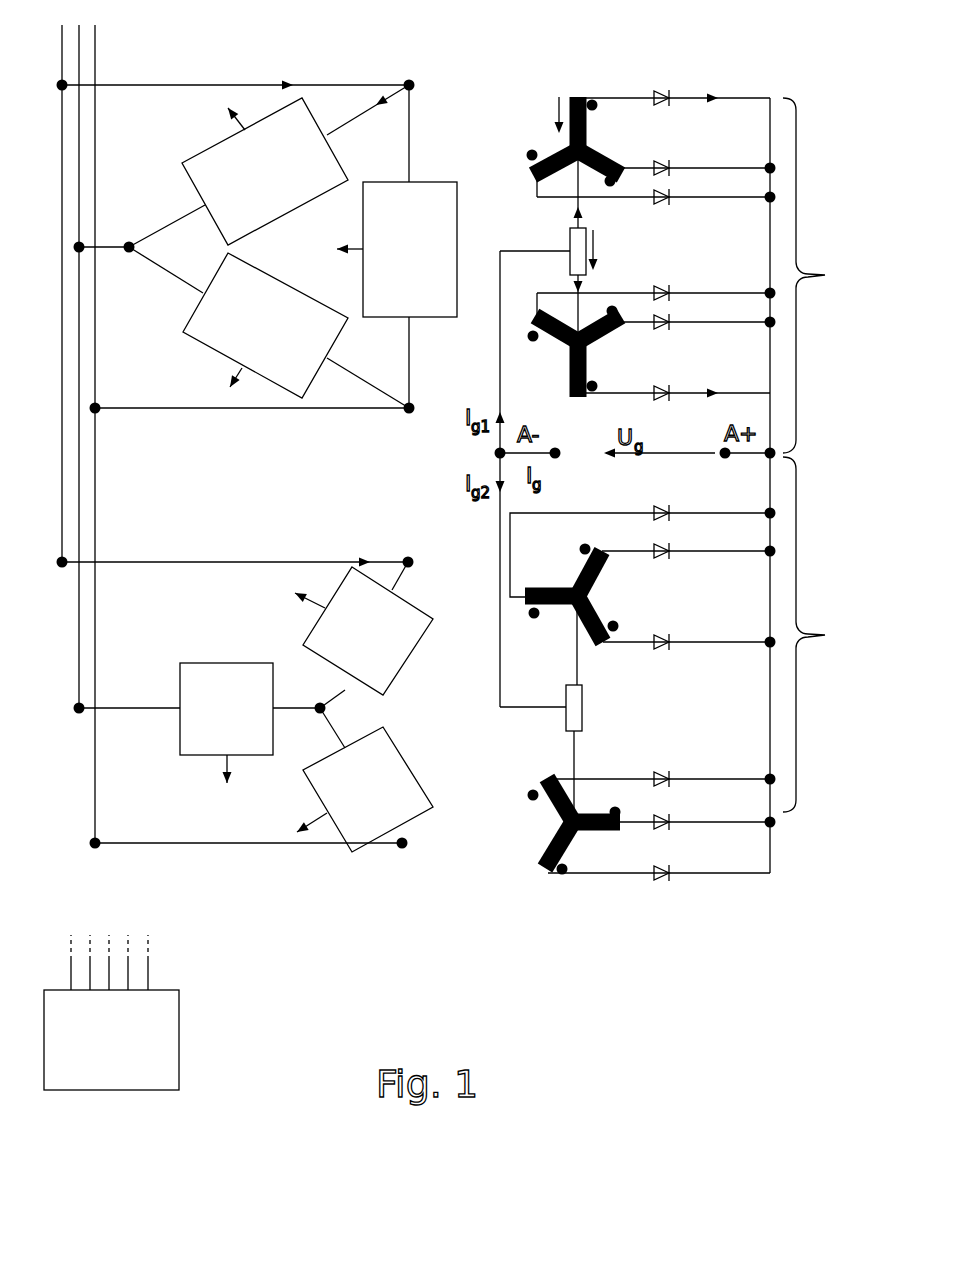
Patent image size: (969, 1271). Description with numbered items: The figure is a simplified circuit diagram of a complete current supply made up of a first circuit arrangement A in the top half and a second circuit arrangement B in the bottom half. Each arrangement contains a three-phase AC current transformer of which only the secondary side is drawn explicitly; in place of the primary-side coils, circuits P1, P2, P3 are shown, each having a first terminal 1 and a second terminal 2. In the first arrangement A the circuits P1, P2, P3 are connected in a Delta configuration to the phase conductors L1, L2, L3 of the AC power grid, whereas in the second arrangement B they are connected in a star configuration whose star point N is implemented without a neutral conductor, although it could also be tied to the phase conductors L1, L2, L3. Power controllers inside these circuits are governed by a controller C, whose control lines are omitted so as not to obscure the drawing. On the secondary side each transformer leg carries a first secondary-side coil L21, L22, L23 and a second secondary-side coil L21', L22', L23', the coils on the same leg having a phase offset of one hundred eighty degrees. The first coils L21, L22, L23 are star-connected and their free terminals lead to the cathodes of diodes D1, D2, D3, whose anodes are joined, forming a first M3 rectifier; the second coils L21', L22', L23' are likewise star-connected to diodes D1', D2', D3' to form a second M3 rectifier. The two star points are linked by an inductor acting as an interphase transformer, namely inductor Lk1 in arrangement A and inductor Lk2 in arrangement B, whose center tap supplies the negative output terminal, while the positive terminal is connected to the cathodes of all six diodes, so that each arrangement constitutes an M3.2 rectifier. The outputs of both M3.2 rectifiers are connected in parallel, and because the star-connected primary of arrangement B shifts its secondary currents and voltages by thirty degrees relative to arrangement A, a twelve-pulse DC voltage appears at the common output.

The first terminal 1 is at (330, 137).
The second terminal 2 is at (410, 182).
The phase conductor L1 is at (241, 288).
The phase conductor L2 is at (109, 374).
The phase conductor L3 is at (257, 451).
The star point N is at (331, 710).
The circuit P1 is at (307, 396).
The circuit P2 is at (264, 504).
The circuit P3 is at (380, 517).
The controller C is at (203, 586).
The first circuit arrangement A is at (814, 275).
The second circuit arrangement B is at (814, 634).
The first converter valve D1 is at (677, 331).
The first converter valve D2 is at (689, 414).
The first converter valve D3 is at (643, 386).
The converter valve D1' is at (659, 661).
The converter valve D2' is at (656, 514).
The converter valve D3' is at (698, 593).
The first secondary-side coil L21 is at (580, 323).
The first secondary-side coil L22 is at (626, 385).
The first secondary-side coil L23 is at (514, 397).
The second secondary-side coil L21' is at (529, 621).
The second secondary-side coil L22' is at (513, 582).
The second secondary-side coil L23' is at (610, 564).
The inductor Lk1 is at (570, 262).
The inductor Lk2 is at (582, 700).